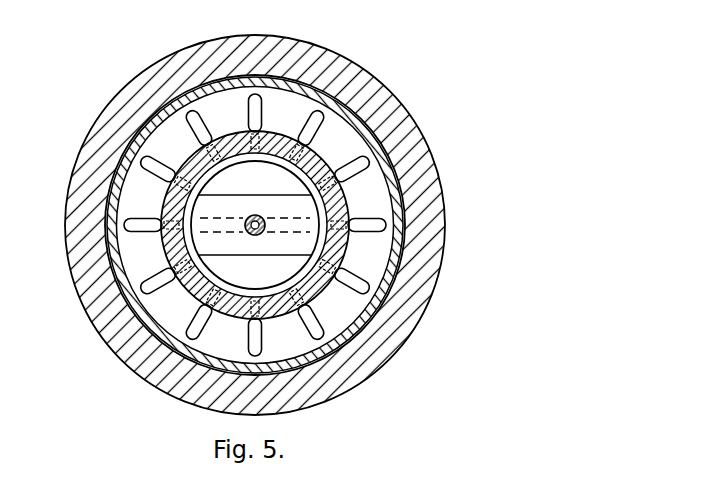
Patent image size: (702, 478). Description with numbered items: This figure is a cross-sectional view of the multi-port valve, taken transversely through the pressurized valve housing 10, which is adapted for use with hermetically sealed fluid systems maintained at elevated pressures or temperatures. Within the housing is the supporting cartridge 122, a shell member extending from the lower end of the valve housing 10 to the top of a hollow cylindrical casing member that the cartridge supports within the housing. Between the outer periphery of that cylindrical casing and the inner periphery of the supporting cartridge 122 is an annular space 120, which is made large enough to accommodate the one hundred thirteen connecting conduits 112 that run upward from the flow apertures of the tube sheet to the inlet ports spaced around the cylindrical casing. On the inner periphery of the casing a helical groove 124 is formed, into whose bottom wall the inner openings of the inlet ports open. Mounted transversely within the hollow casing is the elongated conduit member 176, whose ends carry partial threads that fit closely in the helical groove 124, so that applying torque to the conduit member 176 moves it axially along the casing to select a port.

The pressurized valve housing 10 is at (483, 183).
The annular space 120 is at (352, 308).
The supporting cartridge 122 is at (397, 250).
The connecting conduits 112 is at (355, 163).
The helical groove 124 is at (265, 130).
The elongated conduit member 176 is at (271, 196).